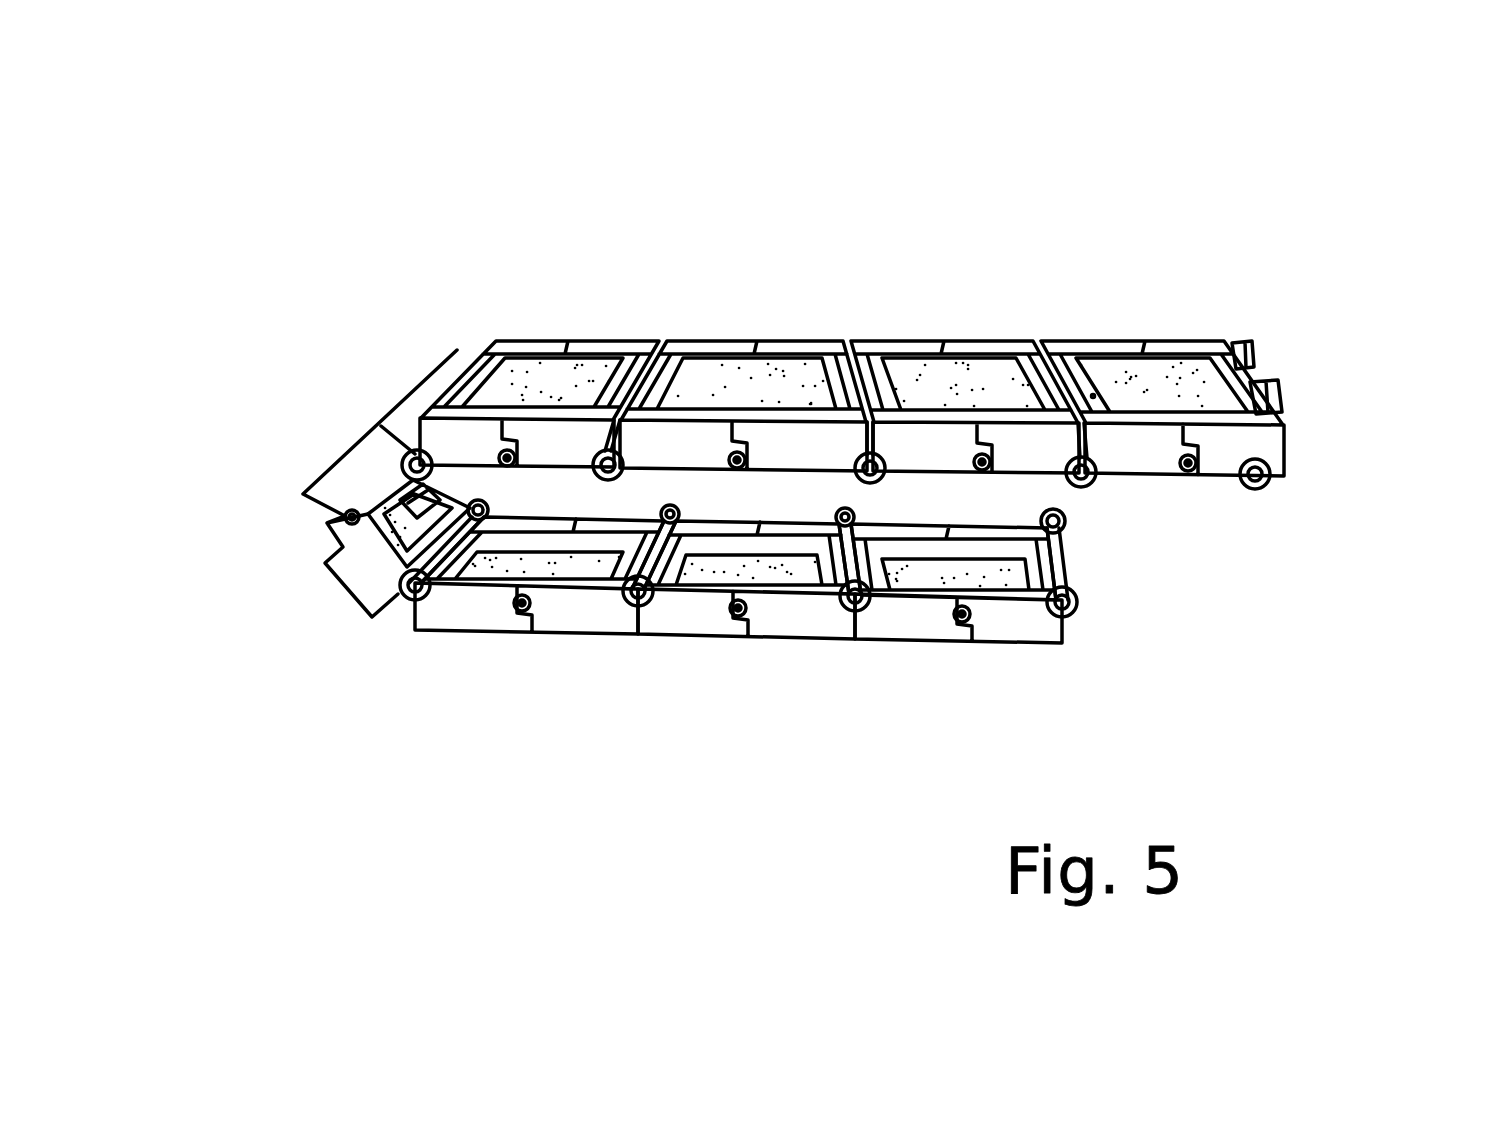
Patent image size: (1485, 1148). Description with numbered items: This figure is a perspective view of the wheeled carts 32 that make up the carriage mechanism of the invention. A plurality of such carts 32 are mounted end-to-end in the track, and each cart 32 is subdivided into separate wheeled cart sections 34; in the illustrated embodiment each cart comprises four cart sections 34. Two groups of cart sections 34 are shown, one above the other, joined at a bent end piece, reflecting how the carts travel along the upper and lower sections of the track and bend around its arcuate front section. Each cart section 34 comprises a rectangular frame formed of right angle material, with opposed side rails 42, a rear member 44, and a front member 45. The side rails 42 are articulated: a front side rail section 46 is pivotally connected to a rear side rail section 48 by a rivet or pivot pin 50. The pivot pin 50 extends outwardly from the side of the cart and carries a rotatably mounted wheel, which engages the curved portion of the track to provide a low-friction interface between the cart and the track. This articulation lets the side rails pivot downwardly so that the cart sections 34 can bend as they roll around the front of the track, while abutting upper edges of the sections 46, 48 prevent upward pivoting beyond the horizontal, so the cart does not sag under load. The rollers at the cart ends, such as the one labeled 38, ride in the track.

The wheeled cart 32 is at (517, 253).
The wheeled cart section 34 is at (930, 326).
The roller 38 is at (1270, 484).
The side rail 42 is at (1190, 340).
The rear member 44 is at (1253, 378).
The front member 45 is at (1092, 393).
The front side rail section 46 is at (362, 578).
The rear side rail section 48 is at (357, 471).
The pivot pin 50 is at (344, 519).